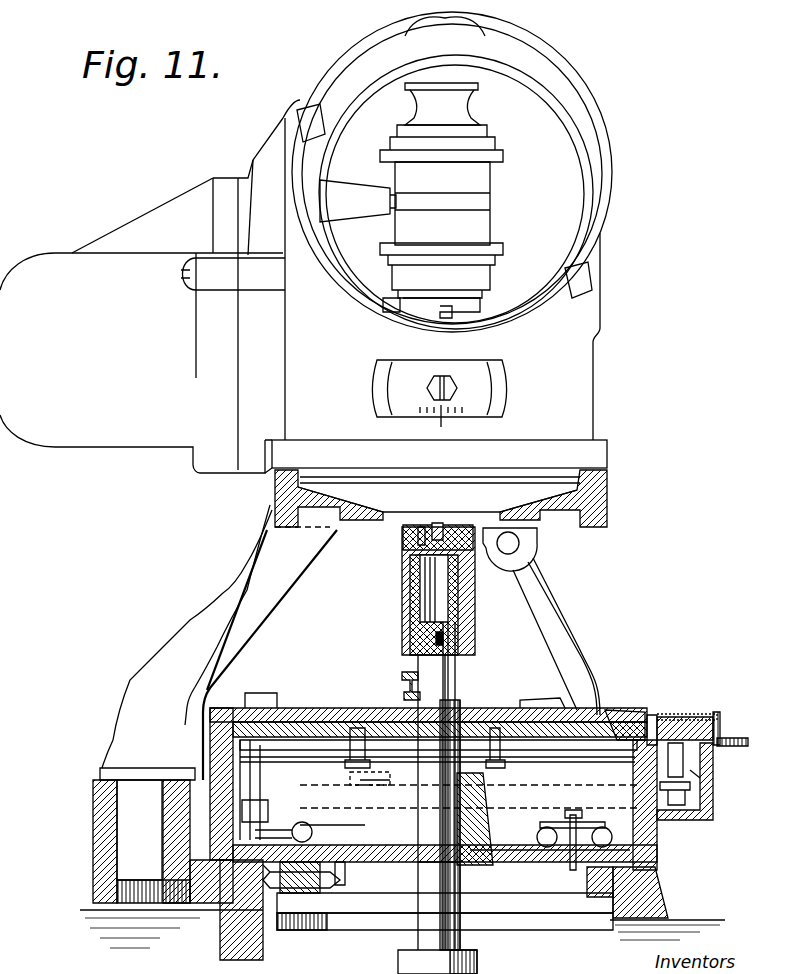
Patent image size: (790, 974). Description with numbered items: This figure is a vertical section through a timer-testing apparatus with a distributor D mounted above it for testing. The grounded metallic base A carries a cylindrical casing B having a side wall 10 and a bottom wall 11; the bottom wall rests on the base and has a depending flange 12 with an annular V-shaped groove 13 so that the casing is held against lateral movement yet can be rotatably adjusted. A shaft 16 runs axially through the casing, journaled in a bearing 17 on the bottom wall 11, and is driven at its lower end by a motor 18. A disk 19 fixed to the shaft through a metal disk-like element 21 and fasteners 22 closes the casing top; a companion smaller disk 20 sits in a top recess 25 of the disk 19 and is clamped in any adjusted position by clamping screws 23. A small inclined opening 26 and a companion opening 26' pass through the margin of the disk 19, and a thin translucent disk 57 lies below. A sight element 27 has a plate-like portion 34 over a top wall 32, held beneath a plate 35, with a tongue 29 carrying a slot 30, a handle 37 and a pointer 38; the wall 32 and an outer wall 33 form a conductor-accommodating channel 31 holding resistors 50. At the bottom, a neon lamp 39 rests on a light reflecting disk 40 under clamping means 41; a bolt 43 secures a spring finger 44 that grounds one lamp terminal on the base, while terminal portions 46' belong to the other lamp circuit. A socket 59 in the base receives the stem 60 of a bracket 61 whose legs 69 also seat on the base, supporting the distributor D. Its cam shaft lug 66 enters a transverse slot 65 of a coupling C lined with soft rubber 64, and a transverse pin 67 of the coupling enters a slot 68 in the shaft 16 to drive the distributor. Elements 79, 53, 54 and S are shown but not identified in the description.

The telescope objective/lens cell 79 is at (478, 203).
The distributor D is at (602, 310).
The bracket 61 is at (272, 500).
The transverse slot 65 is at (418, 545).
The coupling C is at (402, 592).
The transverse lug 66 is at (436, 589).
The lining 64 is at (462, 600).
The legs 69 is at (555, 597).
The transverse pin 67 is at (436, 637).
The transverse slot 68 is at (460, 637).
The clamping screw 23 is at (402, 677).
The disk-like element 21 is at (477, 708).
The boss 53 is at (543, 708).
The companion opening 26' is at (624, 700).
The slot or opening 30 is at (641, 713).
The tongue 29 is at (655, 712).
The sight element 27 is at (675, 712).
The plate-like portion 34 is at (672, 716).
The plate 35 is at (690, 714).
The index or pointer 38 is at (716, 714).
The handle 37 is at (740, 738).
The top wall 32 is at (713, 760).
The conductor-accommodating channel 31 is at (700, 775).
The outer wall 33 is at (715, 818).
The resistor 50 is at (682, 808).
The disk 19 is at (540, 762).
The small opening 26 is at (438, 761).
The fasteners 22 is at (362, 760).
The thin disk 57 is at (273, 790).
The terminal portions 46' is at (274, 803).
The bearing 17 is at (380, 784).
The light reflecting disk 40 is at (322, 835).
The lamp 39 is at (508, 832).
The clamping means 41 is at (582, 818).
The bottom wall 11 is at (510, 860).
The depending flange 12 is at (590, 880).
The annular V-shaped groove 13 is at (658, 882).
The base A is at (668, 905).
The casing B is at (657, 853).
The socket 59 is at (93, 843).
The stem 60 is at (153, 841).
The ground surface S is at (162, 918).
The bolt 43 is at (345, 870).
The spring finger 44 is at (318, 910).
The shaft 16 is at (447, 938).
The motor 18 is at (398, 970).
The side wall 10 is at (210, 743).
The companion smaller disk 20 is at (345, 700).
The top recess 25 is at (291, 708).
The boss 54 is at (258, 700).